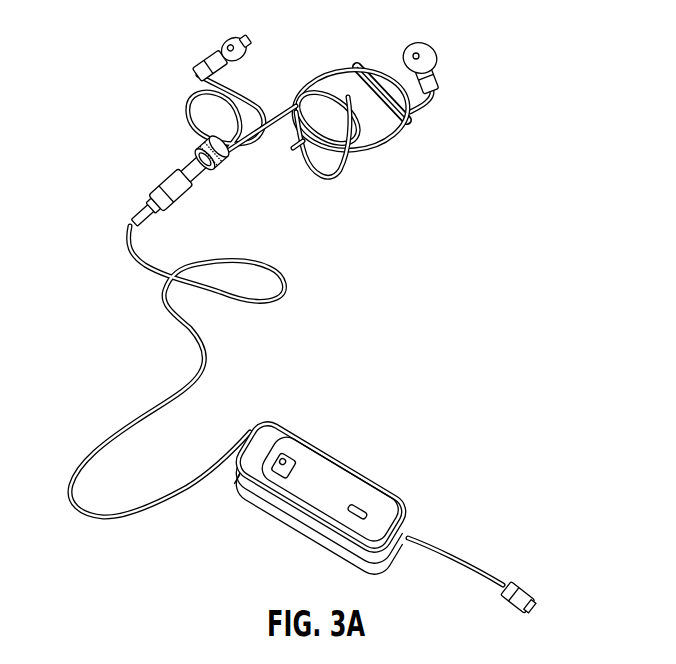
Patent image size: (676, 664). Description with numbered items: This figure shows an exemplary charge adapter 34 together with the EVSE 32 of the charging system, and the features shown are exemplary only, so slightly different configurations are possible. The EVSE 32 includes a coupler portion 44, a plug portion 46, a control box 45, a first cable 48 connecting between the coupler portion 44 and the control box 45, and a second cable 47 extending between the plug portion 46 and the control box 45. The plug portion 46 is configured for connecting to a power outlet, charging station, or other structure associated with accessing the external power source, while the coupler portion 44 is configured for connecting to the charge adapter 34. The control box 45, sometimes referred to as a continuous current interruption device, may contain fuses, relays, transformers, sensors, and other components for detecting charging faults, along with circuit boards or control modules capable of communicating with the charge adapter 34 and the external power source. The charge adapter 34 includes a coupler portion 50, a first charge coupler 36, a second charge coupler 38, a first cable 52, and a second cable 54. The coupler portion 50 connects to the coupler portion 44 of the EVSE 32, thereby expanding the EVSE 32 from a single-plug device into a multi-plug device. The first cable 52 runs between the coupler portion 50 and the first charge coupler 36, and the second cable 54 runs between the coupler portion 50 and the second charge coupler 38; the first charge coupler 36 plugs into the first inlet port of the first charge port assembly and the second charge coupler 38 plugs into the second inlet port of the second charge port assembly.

The EVSE 32 is at (263, 547).
The charge adapter 34 is at (130, 81).
The first charge coupler 36 is at (227, 38).
The second charge coupler 38 is at (428, 48).
The coupler portion 44 is at (173, 182).
The control box 45 is at (347, 463).
The plug portion 46 is at (524, 590).
The second cable 47 is at (467, 558).
The first cable 48 is at (207, 340).
The coupler portion 50 is at (224, 168).
The first cable 52 is at (235, 86).
The second cable 54 is at (403, 123).